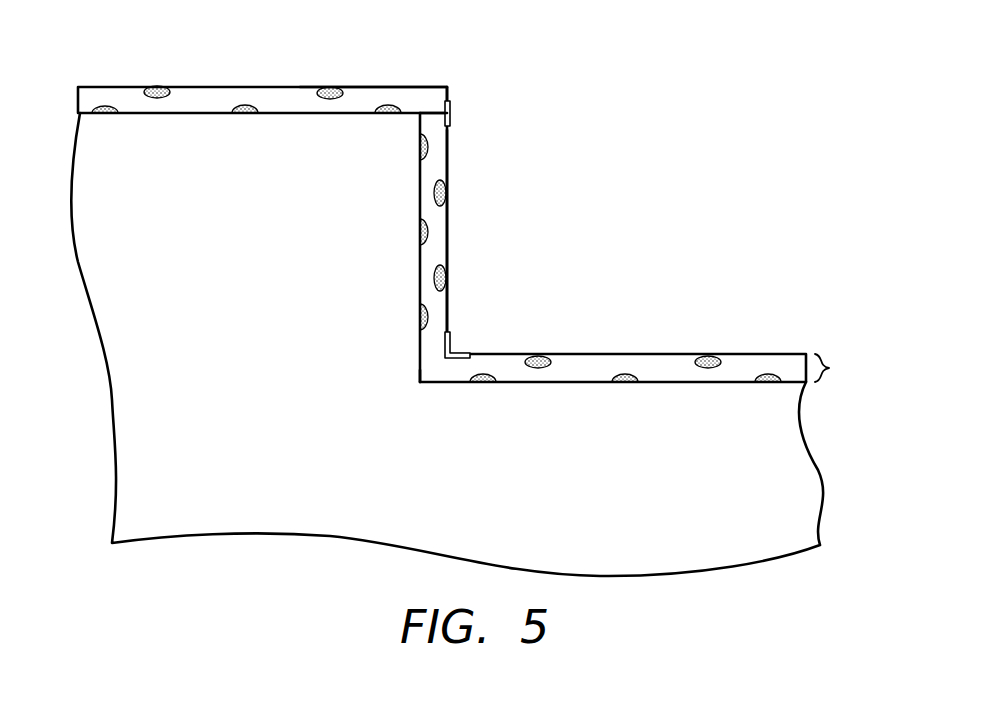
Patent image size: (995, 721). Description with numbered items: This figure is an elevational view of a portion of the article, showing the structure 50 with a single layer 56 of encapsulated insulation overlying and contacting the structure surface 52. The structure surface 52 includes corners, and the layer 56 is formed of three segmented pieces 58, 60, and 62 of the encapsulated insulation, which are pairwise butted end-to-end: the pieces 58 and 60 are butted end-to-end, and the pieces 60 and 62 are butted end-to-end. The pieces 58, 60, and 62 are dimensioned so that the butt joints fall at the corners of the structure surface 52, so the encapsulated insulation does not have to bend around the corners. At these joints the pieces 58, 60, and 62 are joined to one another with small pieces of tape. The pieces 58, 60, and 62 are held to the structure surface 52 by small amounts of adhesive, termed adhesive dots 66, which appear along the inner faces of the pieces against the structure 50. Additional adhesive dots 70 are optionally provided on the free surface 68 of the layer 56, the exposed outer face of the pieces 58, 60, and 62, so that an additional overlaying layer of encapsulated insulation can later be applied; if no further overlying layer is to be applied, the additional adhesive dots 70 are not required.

The structure 50 is at (132, 219).
The structure surface 52 is at (420, 210).
The layer 56 is at (843, 370).
The segmented piece 58 is at (283, 95).
The segmented piece 60 is at (437, 250).
The segmented piece 62 is at (660, 358).
The adhesive dots 66 is at (112, 108).
The free surface 68 is at (380, 87).
The additional adhesive dots 70 is at (158, 88).